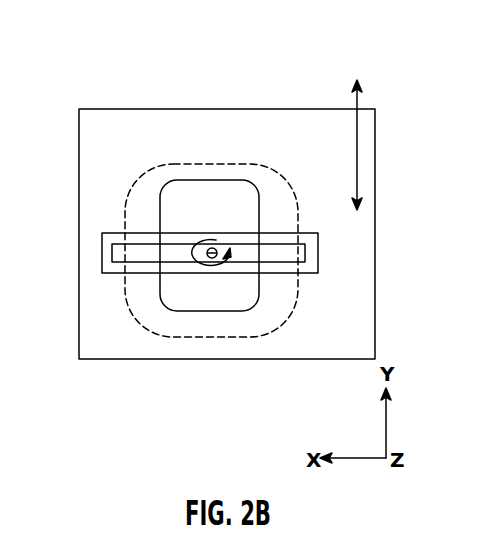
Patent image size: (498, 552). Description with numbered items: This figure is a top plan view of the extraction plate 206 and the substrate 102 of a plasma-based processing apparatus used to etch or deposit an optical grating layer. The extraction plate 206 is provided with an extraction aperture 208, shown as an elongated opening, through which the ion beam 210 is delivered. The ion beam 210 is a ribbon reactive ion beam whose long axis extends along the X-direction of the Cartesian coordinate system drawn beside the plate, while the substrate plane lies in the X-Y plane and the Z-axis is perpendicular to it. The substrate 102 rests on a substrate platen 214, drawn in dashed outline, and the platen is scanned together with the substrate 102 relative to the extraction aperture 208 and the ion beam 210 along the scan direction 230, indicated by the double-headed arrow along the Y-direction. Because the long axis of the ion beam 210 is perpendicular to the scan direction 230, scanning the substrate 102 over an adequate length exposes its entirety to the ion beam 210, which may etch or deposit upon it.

The substrate 102 is at (200, 180).
The extraction plate 206 is at (95, 109).
The extraction aperture 208 is at (141, 233).
The ion beam 210 is at (268, 248).
The substrate platen 214 is at (296, 291).
The scan direction 230 is at (357, 150).